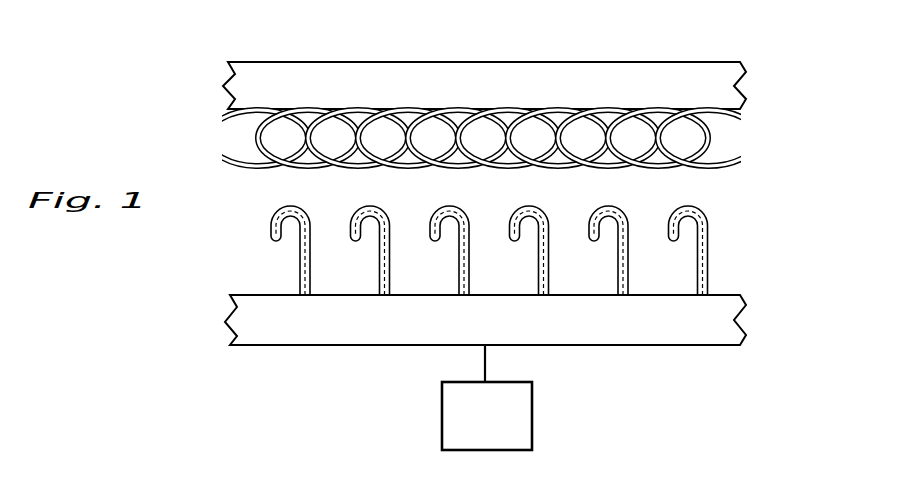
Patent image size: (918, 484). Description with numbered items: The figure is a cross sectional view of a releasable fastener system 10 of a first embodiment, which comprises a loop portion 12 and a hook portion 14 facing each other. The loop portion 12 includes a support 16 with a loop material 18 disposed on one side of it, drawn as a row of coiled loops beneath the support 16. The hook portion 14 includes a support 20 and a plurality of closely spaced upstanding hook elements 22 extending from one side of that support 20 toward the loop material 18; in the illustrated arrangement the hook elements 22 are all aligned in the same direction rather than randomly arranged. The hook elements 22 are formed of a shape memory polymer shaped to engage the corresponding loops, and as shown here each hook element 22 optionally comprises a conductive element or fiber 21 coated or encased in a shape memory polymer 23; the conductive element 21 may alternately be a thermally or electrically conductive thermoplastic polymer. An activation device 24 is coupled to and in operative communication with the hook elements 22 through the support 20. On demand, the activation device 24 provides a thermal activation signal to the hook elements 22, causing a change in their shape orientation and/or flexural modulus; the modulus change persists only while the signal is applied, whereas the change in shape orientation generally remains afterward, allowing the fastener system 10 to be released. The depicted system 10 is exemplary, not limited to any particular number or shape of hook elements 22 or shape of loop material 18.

The releasable fastener system 10 is at (341, 48).
The loop portion 12 is at (176, 103).
The hook portion 14 is at (180, 287).
The support 16 is at (540, 72).
The loop material 18 is at (670, 163).
The support 20 is at (363, 332).
The conductive element or fiber 21 is at (710, 270).
The hook elements 22 is at (713, 222).
The shape memory polymer 23 is at (709, 254).
The activation device 24 is at (514, 416).